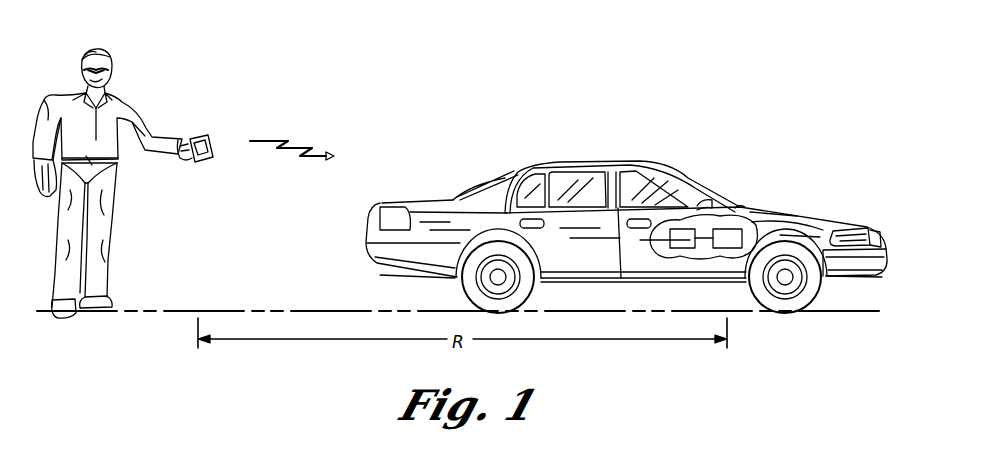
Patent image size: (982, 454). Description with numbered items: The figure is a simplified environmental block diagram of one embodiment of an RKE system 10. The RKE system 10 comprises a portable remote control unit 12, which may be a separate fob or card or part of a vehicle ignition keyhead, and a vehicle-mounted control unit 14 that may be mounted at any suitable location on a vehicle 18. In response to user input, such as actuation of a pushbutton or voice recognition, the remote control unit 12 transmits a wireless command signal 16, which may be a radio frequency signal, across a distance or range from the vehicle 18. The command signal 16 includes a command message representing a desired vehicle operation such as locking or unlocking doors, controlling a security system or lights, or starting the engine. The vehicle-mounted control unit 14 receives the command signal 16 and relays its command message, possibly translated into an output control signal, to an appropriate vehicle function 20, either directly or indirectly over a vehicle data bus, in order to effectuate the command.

The RKE system 10 is at (428, 72).
The remote control unit 12 is at (210, 135).
The vehicle-mounted control unit 14 is at (731, 229).
The command signal 16 is at (305, 140).
The vehicle 18 is at (626, 229).
The vehicle function 20 is at (688, 229).